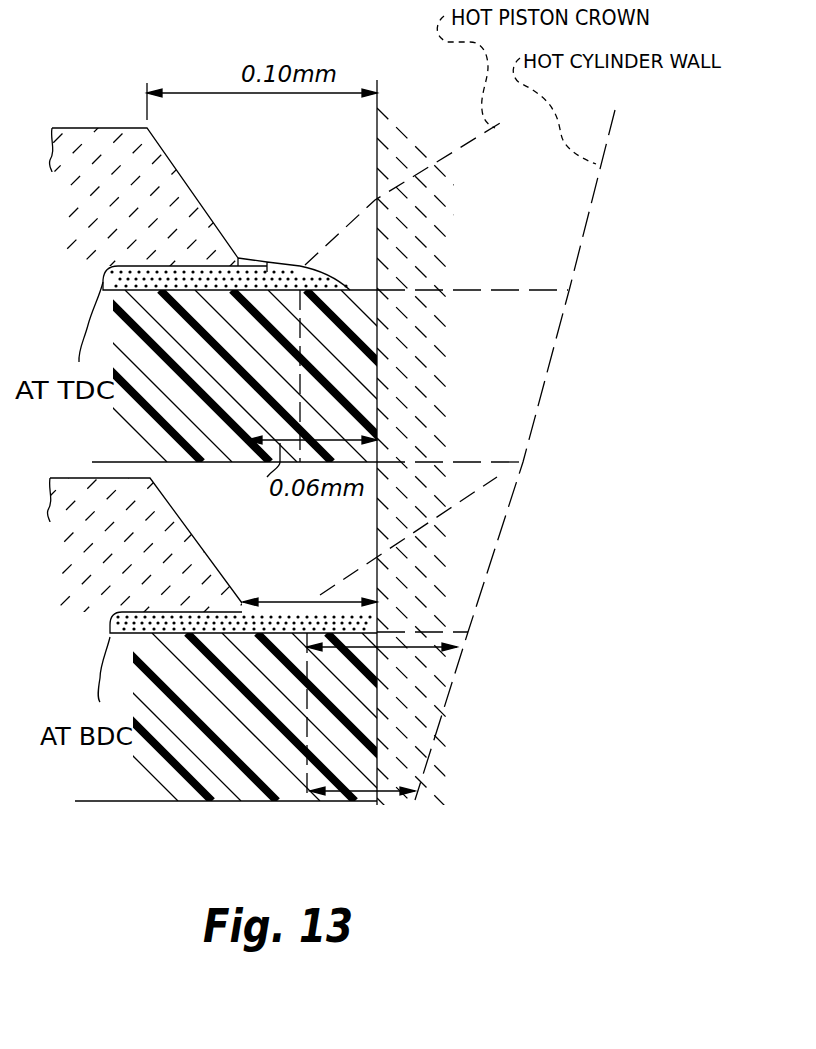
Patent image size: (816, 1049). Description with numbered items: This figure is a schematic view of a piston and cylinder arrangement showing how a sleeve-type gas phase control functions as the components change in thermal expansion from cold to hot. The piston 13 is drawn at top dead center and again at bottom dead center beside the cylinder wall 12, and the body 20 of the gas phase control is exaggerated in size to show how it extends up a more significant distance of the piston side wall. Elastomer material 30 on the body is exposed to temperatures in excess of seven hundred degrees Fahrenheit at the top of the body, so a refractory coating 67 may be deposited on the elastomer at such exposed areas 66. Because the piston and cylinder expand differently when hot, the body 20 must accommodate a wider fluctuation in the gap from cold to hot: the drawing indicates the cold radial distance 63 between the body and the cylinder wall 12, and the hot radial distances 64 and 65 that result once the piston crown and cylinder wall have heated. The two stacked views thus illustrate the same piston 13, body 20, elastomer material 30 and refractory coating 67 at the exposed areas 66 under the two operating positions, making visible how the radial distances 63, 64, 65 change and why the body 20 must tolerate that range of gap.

The cylinder wall 12 is at (399, 152).
The piston 13 is at (142, 193).
The body 20 is at (198, 437).
The elastomer material 30 is at (185, 275).
The cold radial distance 63 is at (310, 579).
The hot radial distance 64 is at (376, 803).
The hot radial distance 65 is at (407, 650).
The exposed areas 66 is at (268, 275).
The refractory coating 67 is at (295, 272).